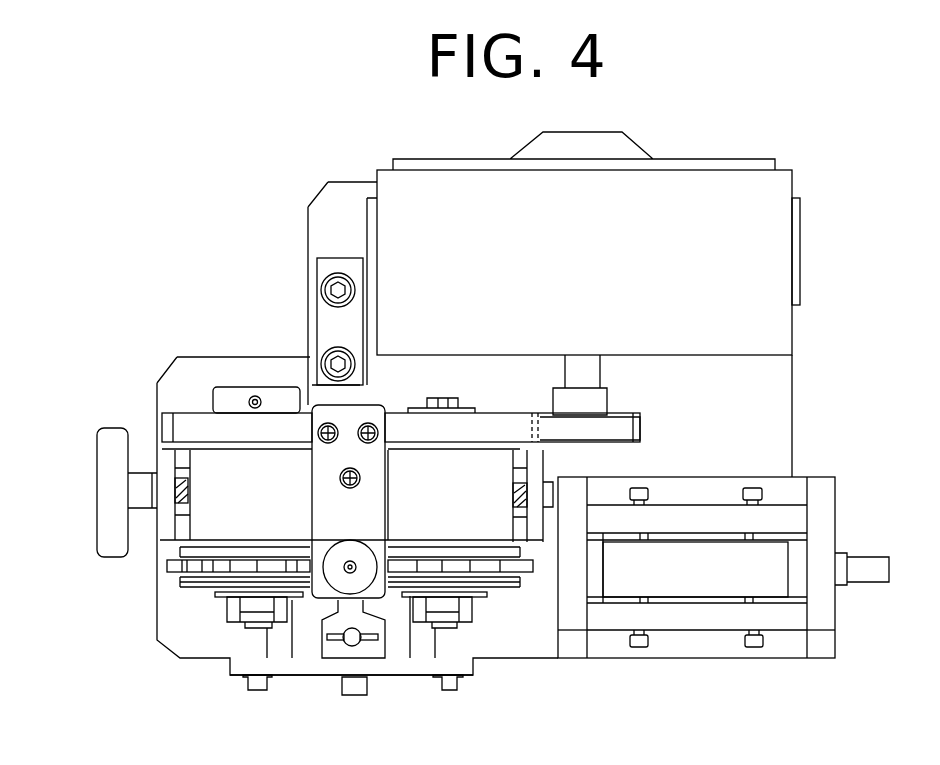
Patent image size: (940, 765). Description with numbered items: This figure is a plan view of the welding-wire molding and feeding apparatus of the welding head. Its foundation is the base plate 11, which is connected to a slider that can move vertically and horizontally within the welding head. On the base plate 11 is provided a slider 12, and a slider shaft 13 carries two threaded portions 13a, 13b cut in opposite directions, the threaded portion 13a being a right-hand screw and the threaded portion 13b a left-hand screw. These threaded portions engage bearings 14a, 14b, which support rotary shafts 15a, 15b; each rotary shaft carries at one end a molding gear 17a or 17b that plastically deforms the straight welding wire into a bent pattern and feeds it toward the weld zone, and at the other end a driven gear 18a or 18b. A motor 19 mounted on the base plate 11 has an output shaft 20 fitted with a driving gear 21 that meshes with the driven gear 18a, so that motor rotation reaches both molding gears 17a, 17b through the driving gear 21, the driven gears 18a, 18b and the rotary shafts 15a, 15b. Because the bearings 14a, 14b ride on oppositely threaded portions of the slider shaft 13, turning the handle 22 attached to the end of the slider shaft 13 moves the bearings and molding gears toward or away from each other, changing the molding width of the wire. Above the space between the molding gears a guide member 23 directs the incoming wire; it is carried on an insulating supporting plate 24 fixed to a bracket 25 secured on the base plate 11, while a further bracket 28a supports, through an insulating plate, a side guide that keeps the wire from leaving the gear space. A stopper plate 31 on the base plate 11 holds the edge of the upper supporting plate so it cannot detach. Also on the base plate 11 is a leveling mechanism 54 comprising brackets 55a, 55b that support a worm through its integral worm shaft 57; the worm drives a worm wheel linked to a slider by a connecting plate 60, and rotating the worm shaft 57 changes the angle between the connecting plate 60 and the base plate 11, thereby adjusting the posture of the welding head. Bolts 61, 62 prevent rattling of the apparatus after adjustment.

The base plate 11 is at (785, 415).
The slider 12 is at (163, 527).
The slider shaft 13 is at (175, 478).
The threaded portion 13a is at (520, 500).
The threaded portion 13b is at (175, 508).
The bearing 14a is at (463, 527).
The bearing 14b is at (207, 530).
The rotary shaft 15a is at (445, 628).
The rotary shaft 15b is at (256, 626).
The molding gear 17a is at (530, 567).
The molding gear 17b is at (185, 580).
The driven gear 18a is at (502, 423).
The driven gear 18b is at (197, 420).
The motor 19 is at (780, 253).
The output shaft 20 is at (593, 372).
The driving gear 21 is at (582, 430).
The handle 22 is at (100, 455).
The guide member 23 is at (354, 545).
The supporting plate 24 is at (320, 505).
The bracket 25 is at (320, 313).
The bracket 28a is at (377, 645).
The stopper plate 31 is at (375, 670).
The leveling mechanism 54 is at (838, 487).
The bracket 55a is at (577, 647).
The bracket 55b is at (830, 643).
The worm shaft 57 is at (882, 570).
The connecting plate 60 is at (783, 560).
The bolt 61 is at (640, 487).
The bolt 62 is at (638, 650).